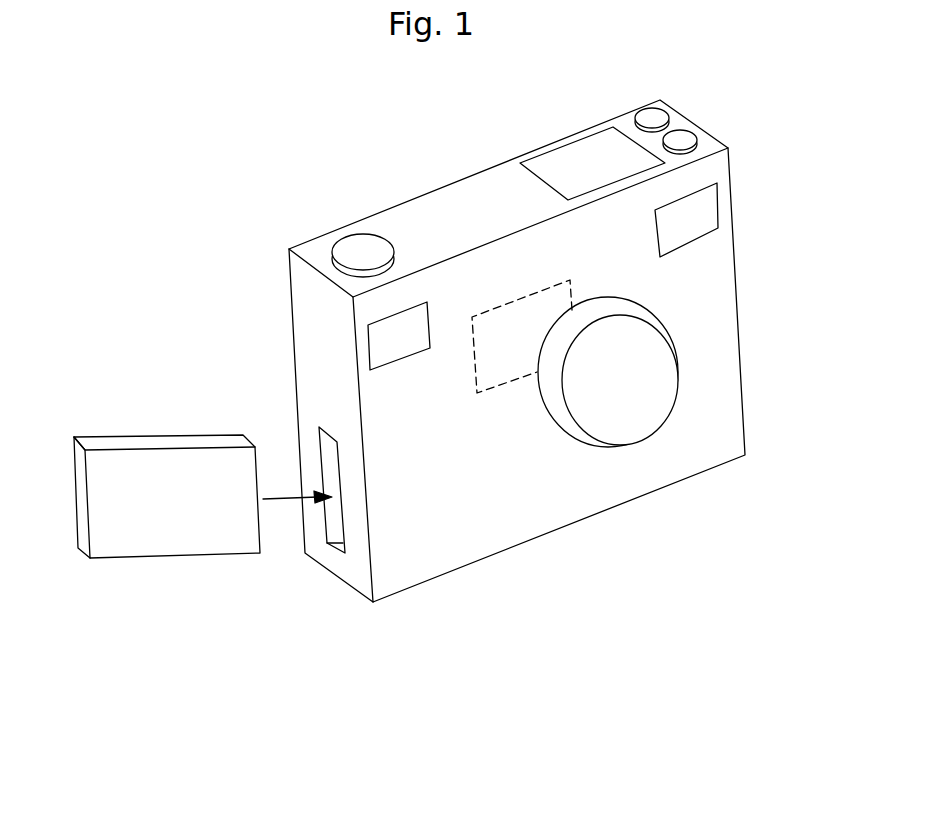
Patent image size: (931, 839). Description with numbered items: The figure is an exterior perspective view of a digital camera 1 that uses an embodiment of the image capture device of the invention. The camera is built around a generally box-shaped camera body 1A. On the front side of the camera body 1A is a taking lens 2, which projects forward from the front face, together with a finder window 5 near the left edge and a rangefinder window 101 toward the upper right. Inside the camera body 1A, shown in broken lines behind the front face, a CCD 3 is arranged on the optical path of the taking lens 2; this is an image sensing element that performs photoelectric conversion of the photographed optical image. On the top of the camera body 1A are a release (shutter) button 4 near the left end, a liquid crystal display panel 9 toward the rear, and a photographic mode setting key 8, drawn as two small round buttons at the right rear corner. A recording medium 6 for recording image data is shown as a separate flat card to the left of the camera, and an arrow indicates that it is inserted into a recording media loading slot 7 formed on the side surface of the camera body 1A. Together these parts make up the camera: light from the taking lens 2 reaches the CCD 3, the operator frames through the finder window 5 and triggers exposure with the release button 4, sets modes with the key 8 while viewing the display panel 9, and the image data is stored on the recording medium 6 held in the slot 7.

The digital camera 1 is at (278, 250).
The camera body 1A is at (585, 518).
The taking lens 2 is at (677, 373).
The CCD 3 is at (516, 300).
The release button 4 is at (354, 237).
The finder window 5 is at (368, 340).
The recording medium 6 is at (132, 435).
The recording media loading slot 7 is at (335, 522).
The photographic mode setting key 8 is at (663, 102).
The liquid crystal display panel 9 is at (585, 133).
The rangefinder window 101 is at (733, 200).